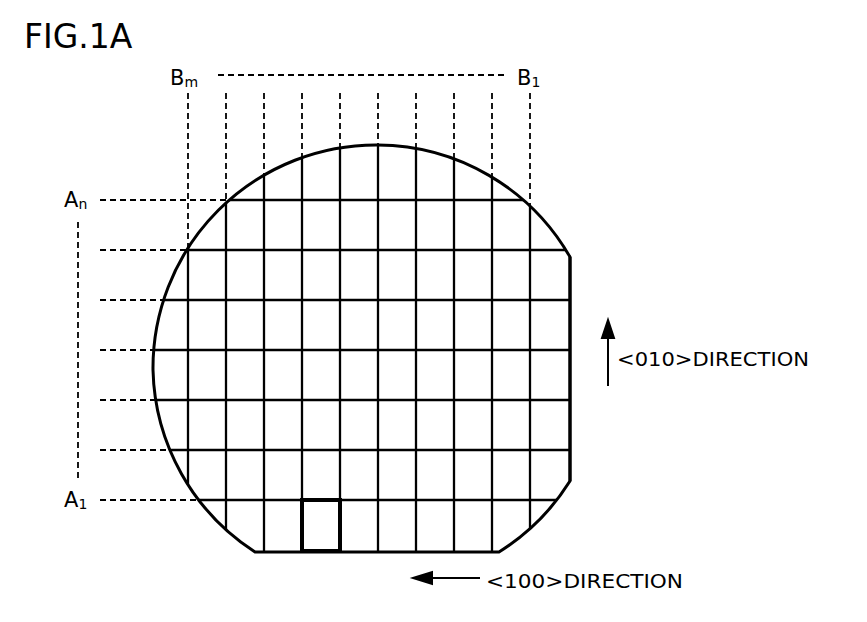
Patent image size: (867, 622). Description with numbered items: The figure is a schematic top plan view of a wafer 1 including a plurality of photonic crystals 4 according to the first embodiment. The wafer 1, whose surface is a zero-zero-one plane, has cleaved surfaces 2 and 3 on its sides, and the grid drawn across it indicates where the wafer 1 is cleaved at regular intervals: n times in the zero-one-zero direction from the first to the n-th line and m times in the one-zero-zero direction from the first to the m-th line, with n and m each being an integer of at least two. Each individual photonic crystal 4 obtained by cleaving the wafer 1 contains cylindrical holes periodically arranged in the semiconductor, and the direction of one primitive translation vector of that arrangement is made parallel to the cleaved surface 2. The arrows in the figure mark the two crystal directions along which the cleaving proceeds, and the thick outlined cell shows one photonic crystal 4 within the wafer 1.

The wafer 1 is at (548, 222).
The cleaved surface 2 is at (327, 553).
The cleaved surface 3 is at (572, 438).
The photonic crystal 4 is at (315, 525).